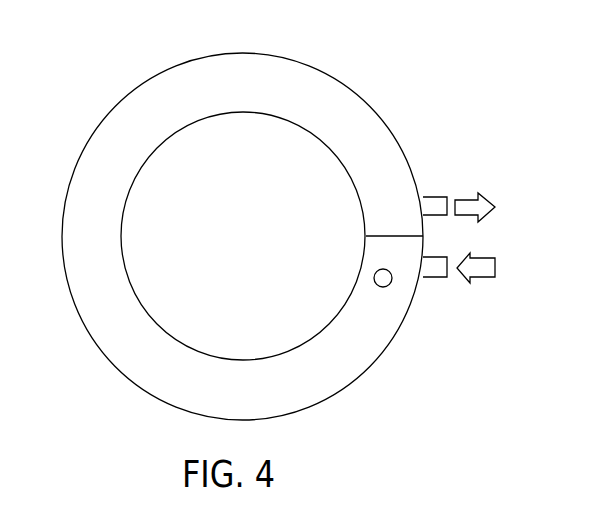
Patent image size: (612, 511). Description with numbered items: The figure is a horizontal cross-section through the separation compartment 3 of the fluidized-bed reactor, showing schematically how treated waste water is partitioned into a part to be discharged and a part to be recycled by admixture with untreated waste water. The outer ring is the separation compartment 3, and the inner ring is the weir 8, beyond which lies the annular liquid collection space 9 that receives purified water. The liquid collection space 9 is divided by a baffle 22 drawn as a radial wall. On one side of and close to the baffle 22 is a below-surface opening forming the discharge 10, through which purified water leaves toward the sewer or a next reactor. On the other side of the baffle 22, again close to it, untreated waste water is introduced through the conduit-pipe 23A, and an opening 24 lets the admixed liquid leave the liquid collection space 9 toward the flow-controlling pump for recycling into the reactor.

The separation compartment 3 is at (117, 97).
The weir 8 is at (134, 168).
The liquid collection space 9 is at (303, 107).
The discharge 10 is at (436, 191).
The baffle 22 is at (391, 228).
The conduit-pipe for untreated waste water 23A is at (438, 286).
The opening 24 is at (366, 274).